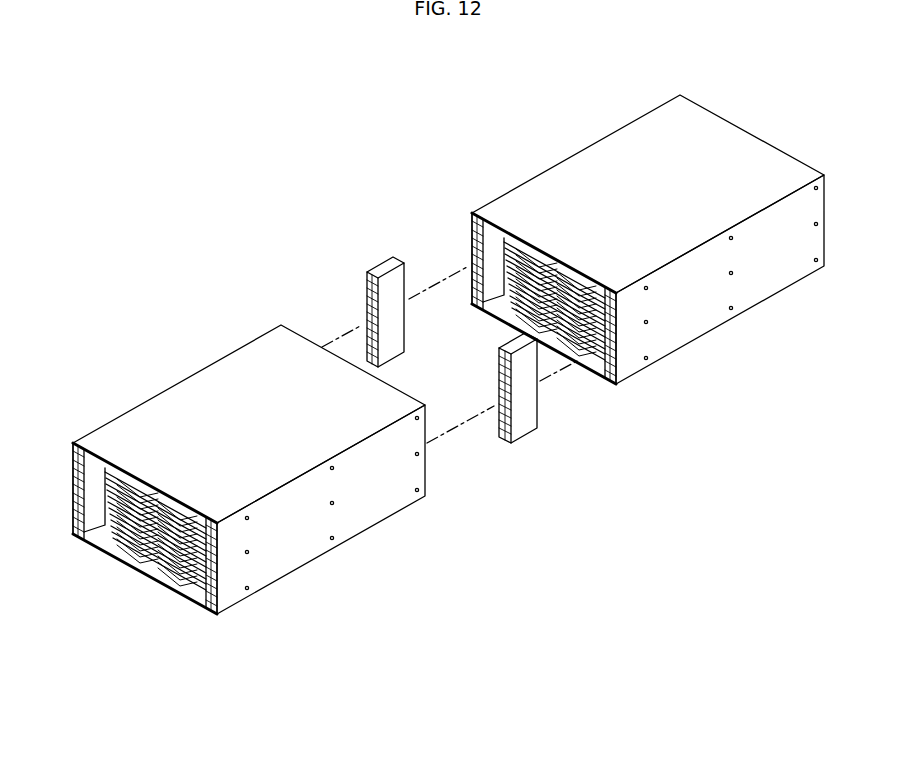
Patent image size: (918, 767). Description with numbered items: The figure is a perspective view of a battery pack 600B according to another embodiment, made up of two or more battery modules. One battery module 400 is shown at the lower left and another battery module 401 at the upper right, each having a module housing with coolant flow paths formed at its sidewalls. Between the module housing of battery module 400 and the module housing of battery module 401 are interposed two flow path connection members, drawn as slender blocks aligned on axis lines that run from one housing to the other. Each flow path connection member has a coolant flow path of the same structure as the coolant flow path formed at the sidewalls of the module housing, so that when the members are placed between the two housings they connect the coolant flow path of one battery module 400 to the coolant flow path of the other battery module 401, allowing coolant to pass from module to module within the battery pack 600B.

The battery pack 600B is at (222, 93).
The battery module 400 is at (134, 344).
The battery module 401 is at (533, 114).